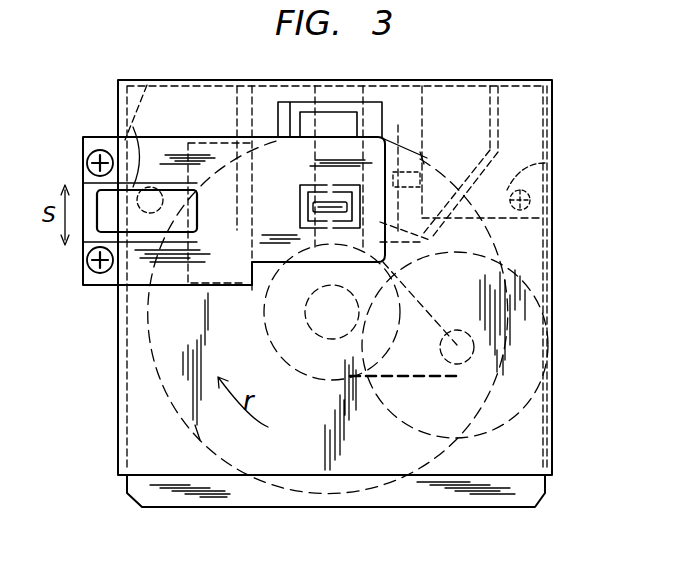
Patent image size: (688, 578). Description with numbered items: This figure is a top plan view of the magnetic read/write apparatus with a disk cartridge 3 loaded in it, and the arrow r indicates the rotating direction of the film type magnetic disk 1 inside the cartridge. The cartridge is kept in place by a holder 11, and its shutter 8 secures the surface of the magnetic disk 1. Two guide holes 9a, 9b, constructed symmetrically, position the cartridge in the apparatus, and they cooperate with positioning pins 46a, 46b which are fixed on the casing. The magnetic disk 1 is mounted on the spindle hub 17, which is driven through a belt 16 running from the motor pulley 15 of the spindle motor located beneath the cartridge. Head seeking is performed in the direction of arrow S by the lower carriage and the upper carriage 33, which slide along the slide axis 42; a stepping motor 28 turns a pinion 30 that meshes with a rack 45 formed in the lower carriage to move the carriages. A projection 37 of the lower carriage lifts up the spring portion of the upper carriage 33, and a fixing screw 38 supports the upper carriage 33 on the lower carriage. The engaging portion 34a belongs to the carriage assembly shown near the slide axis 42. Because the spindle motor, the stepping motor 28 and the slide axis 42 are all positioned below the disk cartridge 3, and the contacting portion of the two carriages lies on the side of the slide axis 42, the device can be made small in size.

The magnetic disk 1 is at (154, 330).
The disk cartridge 3 is at (535, 504).
The shutter 8 is at (398, 97).
The guide hole 9a is at (552, 158).
The guide hole 9b is at (153, 187).
The holder 11 is at (536, 465).
The motor pulley 15 is at (463, 364).
The belt 16 is at (450, 312).
The spindle hub 17 is at (281, 353).
The stepping motor 28 is at (513, 90).
The pinion 30 is at (473, 202).
The upper carriage 33 is at (206, 137).
The engaging member 34a is at (330, 200).
The projection 37 is at (85, 228).
The fixing screw 38 is at (90, 157).
The slide axis 42 is at (240, 73).
The rack 45 is at (422, 248).
The positioning pin 46a is at (530, 202).
The positioning pin 46b is at (133, 127).